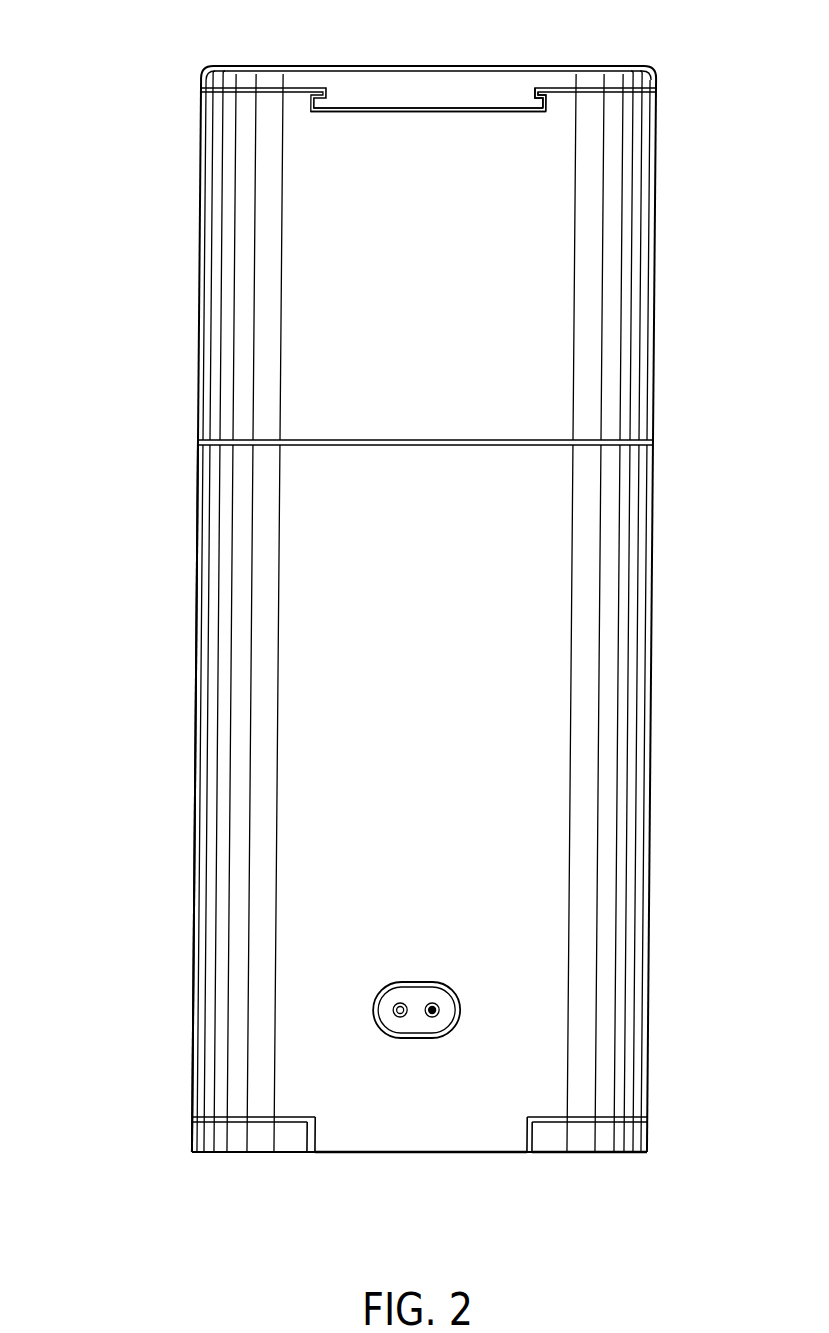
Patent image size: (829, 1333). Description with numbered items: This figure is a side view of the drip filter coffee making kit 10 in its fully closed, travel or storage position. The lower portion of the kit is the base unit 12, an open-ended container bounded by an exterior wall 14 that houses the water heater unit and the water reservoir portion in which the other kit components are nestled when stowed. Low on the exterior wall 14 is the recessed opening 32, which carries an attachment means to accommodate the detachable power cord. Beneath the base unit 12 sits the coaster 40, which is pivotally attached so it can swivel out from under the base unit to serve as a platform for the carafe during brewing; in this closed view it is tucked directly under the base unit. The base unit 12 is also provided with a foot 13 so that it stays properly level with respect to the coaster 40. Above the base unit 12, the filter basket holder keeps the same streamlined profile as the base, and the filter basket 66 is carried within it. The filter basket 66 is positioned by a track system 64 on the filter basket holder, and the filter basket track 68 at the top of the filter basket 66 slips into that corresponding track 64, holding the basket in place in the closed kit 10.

The drip filter coffee making kit 10 is at (180, 268).
The base unit 12 is at (182, 648).
The foot 13 is at (449, 1135).
The exterior wall 14 is at (199, 803).
The recessed opening 32 is at (400, 995).
The coaster 40 is at (622, 1142).
The track system 64 is at (376, 107).
The filter basket 66 is at (570, 243).
The filter basket track 68 is at (542, 92).